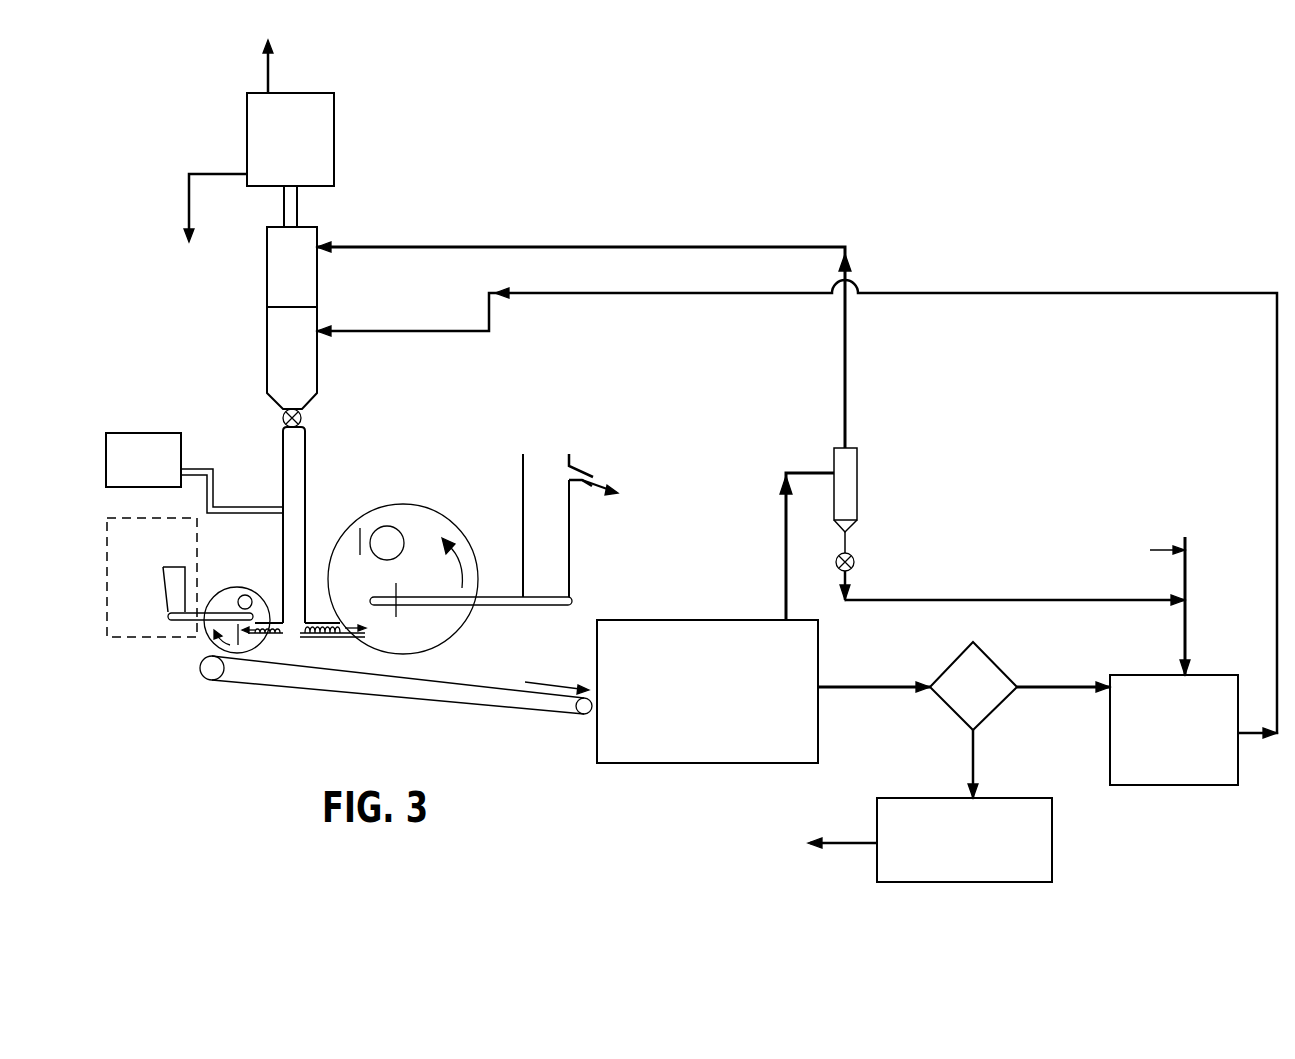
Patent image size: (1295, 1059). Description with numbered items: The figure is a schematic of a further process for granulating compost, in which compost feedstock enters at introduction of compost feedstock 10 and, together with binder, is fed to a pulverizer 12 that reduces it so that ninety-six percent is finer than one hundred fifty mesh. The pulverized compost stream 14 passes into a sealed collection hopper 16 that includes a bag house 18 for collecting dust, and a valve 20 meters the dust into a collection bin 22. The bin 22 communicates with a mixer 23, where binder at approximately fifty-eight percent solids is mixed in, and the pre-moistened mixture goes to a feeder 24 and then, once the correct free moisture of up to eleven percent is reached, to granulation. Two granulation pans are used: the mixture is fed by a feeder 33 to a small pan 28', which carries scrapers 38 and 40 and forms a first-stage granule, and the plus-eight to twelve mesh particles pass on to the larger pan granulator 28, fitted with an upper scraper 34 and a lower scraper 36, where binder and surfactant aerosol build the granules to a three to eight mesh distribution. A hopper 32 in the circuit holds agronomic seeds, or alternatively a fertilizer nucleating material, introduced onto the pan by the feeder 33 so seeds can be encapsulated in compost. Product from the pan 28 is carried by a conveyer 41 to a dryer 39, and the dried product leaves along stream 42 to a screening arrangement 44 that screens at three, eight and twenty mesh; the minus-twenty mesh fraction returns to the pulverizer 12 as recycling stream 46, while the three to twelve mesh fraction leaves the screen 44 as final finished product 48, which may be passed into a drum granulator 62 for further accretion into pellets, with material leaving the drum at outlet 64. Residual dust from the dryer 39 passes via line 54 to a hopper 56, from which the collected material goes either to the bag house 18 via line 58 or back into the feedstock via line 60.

The introduction of compost feedstock 10 is at (1172, 533).
The pulverizer 12 is at (1127, 782).
The compost stream 14 is at (1247, 737).
The collection hopper 16 is at (275, 358).
The bag house 18 is at (283, 280).
The valve 20 is at (283, 420).
The collection bin 22 is at (292, 462).
The mixer 23 is at (194, 473).
The feeder 24 is at (322, 640).
The pan granulator 28 is at (403, 548).
The small pan 28' is at (185, 649).
The hopper 32 is at (172, 579).
The feeder 33 is at (272, 636).
The upper scraper 34 is at (356, 530).
The lower scraper 36 is at (400, 614).
The scraper 38 is at (238, 655).
The dryer 39 is at (678, 620).
The scraper 40 is at (260, 596).
The conveyer 41 is at (486, 700).
The outlet line 42 is at (866, 690).
The screening arrangement 44 is at (955, 713).
The recycling stream 46 is at (1053, 686).
The final finished product stream 48 is at (975, 757).
The line 54 is at (786, 530).
The hopper 56 is at (852, 462).
The line 58 is at (845, 362).
The line 60 is at (1005, 598).
The drum granulator 62 is at (964, 840).
The discharge line 64 is at (845, 840).